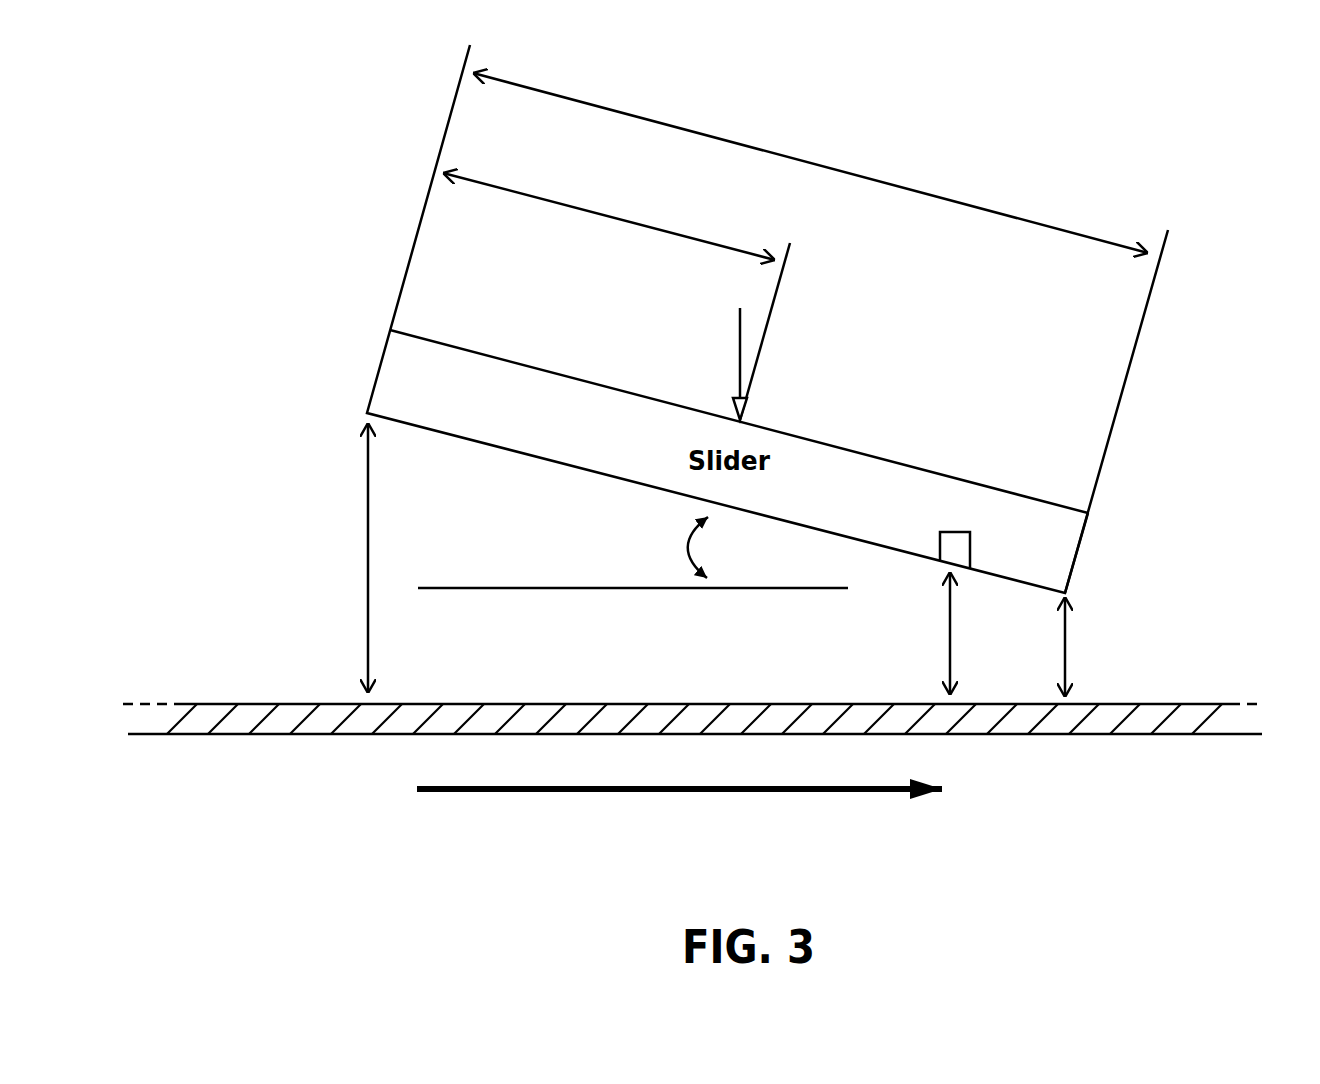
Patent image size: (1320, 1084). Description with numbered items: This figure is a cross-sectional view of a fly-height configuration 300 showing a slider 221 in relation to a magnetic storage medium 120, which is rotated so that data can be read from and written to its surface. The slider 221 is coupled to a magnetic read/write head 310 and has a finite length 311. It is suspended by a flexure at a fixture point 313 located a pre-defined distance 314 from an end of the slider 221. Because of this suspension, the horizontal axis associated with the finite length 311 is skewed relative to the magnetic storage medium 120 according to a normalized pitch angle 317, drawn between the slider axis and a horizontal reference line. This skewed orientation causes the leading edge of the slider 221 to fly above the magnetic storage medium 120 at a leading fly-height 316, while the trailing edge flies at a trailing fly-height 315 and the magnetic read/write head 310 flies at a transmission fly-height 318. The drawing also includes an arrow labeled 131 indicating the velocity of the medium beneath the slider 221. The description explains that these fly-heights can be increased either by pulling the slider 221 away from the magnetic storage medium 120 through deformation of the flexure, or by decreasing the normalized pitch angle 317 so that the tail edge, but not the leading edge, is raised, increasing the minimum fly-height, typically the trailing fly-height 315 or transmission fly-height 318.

The fly-height configuration 300 is at (243, 117).
The finite length 311 is at (1000, 214).
The pre-defined distance 314 is at (497, 187).
The fixture point 313 is at (740, 373).
The magnetic read/write head 310 is at (948, 550).
The slider 221 is at (1082, 537).
The leading fly-height 316 is at (368, 555).
The normalized pitch angle 317 is at (687, 547).
The transmission fly-height 318 is at (948, 643).
The trailing fly-height 315 is at (1067, 643).
The magnetic storage medium 120 is at (1133, 735).
The disk velocity U 131 is at (722, 795).